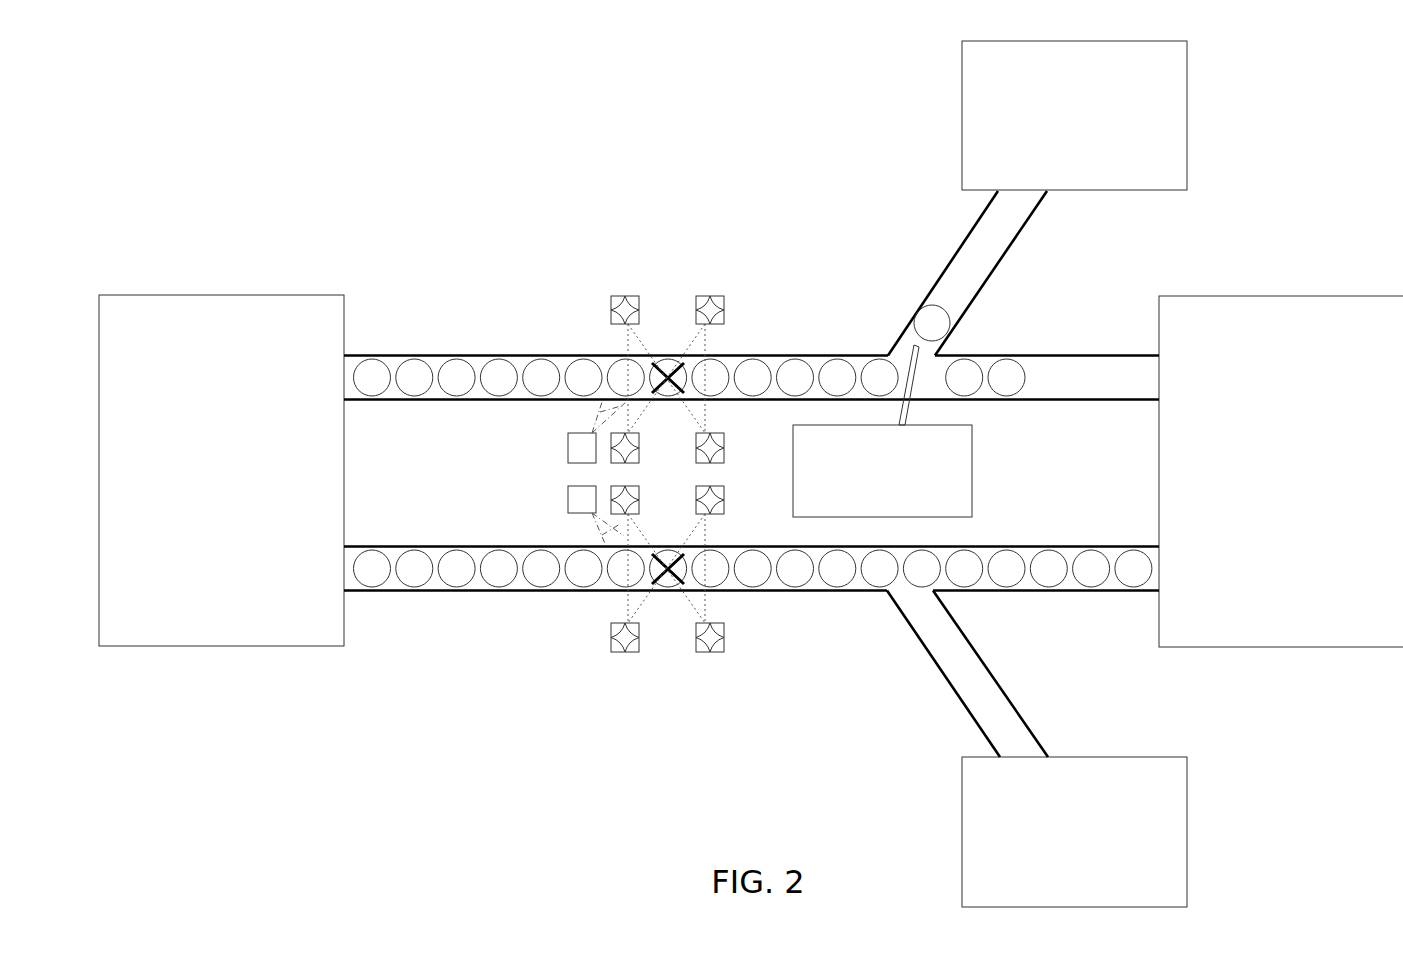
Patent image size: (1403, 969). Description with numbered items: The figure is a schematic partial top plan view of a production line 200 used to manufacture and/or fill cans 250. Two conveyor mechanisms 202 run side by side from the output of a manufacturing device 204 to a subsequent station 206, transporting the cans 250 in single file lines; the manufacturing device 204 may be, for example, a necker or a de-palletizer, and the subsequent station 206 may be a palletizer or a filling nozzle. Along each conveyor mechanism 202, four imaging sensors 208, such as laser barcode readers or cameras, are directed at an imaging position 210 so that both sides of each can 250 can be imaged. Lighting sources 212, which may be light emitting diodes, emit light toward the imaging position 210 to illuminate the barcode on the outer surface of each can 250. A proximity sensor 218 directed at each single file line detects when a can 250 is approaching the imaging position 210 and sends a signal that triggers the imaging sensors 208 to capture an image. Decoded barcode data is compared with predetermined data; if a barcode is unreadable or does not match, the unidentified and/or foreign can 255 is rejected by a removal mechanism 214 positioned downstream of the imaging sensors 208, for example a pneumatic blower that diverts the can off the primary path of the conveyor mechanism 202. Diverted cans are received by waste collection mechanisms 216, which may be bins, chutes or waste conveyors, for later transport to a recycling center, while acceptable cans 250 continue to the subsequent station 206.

The production line 200 is at (275, 783).
The conveyor mechanism 202 is at (467, 591).
The manufacturing device 204 is at (221, 470).
The subsequent station 206 is at (1281, 471).
The imaging sensor 208 is at (705, 312).
The imaging position 210 is at (665, 608).
The lighting source 212 is at (625, 311).
The removal mechanism 214 is at (882, 431).
The waste collection mechanism 216 is at (1037, 474).
The proximity sensor 218 is at (568, 447).
The can 250 is at (456, 377).
The unidentified and/or foreign can 255 is at (918, 318).